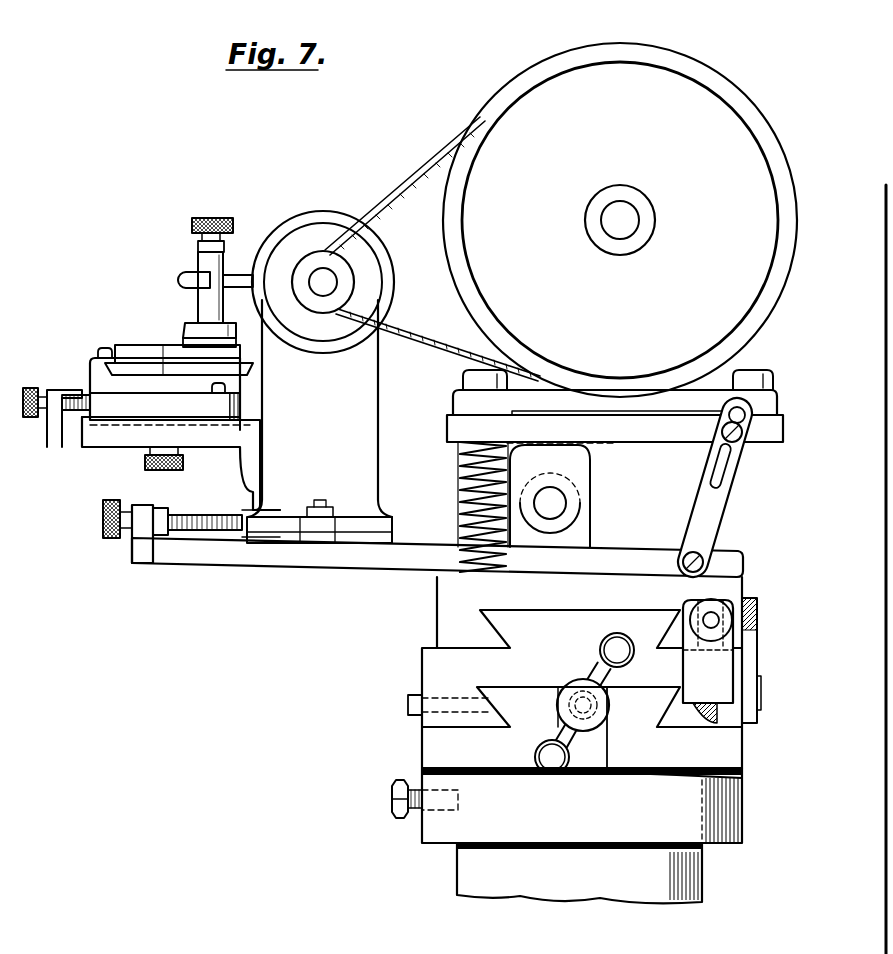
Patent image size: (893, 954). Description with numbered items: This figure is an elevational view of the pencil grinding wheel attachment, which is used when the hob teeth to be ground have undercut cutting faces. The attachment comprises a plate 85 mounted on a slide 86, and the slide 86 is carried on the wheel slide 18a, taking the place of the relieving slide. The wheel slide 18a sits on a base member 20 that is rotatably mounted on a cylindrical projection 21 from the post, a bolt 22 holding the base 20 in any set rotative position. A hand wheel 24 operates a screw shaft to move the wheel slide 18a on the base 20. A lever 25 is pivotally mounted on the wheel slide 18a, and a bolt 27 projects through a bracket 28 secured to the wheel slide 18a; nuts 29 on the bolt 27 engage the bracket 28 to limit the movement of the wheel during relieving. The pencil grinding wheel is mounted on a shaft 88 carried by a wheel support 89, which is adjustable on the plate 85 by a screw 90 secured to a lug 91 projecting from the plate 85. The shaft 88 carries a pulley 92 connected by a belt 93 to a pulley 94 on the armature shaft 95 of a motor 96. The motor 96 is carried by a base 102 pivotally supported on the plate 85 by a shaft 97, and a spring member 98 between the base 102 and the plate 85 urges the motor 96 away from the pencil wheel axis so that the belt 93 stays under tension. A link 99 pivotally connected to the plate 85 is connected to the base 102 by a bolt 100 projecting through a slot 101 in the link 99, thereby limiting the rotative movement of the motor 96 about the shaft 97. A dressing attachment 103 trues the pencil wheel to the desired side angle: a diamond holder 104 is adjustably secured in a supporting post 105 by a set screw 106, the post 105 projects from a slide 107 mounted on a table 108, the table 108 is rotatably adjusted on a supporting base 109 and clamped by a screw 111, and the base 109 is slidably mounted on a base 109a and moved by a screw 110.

The wheel slide 18a is at (422, 667).
The base member 20 is at (742, 755).
The cylindrical projection 21 is at (702, 881).
The bolt 22 is at (392, 800).
The hand wheel 24 is at (600, 654).
The lever 25 is at (757, 638).
The bolt 27 is at (713, 620).
The bracket 28 is at (685, 670).
The nuts 29 is at (690, 610).
The plate 85 is at (640, 553).
The slide 86 is at (437, 596).
The shaft 88 is at (332, 283).
The wheel support 89 is at (378, 416).
The screw 90 is at (208, 515).
The lug 91 is at (145, 506).
The pulley 92 is at (296, 277).
The belt 93 is at (402, 190).
The pulley 94 is at (680, 56).
The armature shaft 95 is at (640, 221).
The motor 96 is at (727, 378).
The shaft 97 is at (560, 505).
The spring member 98 is at (458, 484).
The link 99 is at (718, 516).
The bolt 100 is at (743, 433).
The slot 101 is at (730, 468).
The base 102 is at (658, 444).
The dressing attachment 103 is at (125, 277).
The diamond holder 104 is at (192, 272).
The supporting post 105 is at (201, 305).
The set screw 106 is at (225, 218).
The slide 107 is at (155, 345).
The table 108 is at (90, 372).
The supporting base 109 is at (165, 406).
The base 109a is at (104, 447).
The screw 110 is at (40, 388).
The screw 111 is at (100, 348).